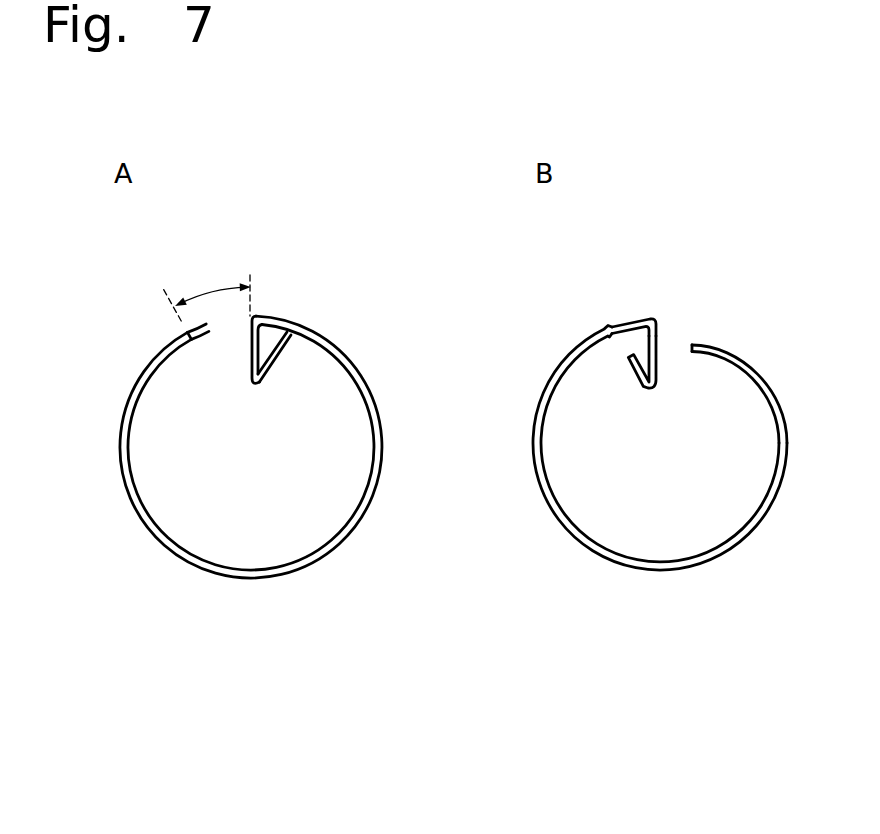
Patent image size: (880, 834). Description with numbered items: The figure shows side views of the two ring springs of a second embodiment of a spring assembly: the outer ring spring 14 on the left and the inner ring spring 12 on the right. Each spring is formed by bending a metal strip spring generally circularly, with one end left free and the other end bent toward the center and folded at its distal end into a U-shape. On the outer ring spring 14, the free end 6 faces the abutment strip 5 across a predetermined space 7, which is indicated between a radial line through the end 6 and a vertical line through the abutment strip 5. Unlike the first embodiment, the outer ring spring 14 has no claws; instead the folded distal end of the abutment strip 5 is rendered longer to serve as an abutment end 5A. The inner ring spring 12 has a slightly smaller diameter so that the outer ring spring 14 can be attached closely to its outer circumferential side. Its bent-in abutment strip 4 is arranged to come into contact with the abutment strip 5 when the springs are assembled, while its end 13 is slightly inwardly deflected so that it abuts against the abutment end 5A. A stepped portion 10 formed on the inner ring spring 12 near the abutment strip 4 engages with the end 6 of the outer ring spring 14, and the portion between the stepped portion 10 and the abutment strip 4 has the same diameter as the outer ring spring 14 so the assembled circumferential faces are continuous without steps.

In FIG. 7A, the outer ring spring 14 is at (320, 323).
In FIG. 7A, the end 6 is at (183, 331).
In FIG. 7A, the abutment strip 5 is at (250, 358).
In FIG. 7A, the abutment end 5A is at (299, 342).
In FIG. 7A, the space 7 is at (207, 288).
In FIG. 7B, the stepped portion 10 is at (602, 331).
In FIG. 7B, the inner ring spring 12 is at (634, 310).
In FIG. 7B, the abutment strip 4 is at (662, 362).
In FIG. 7B, the end 13 is at (686, 349).